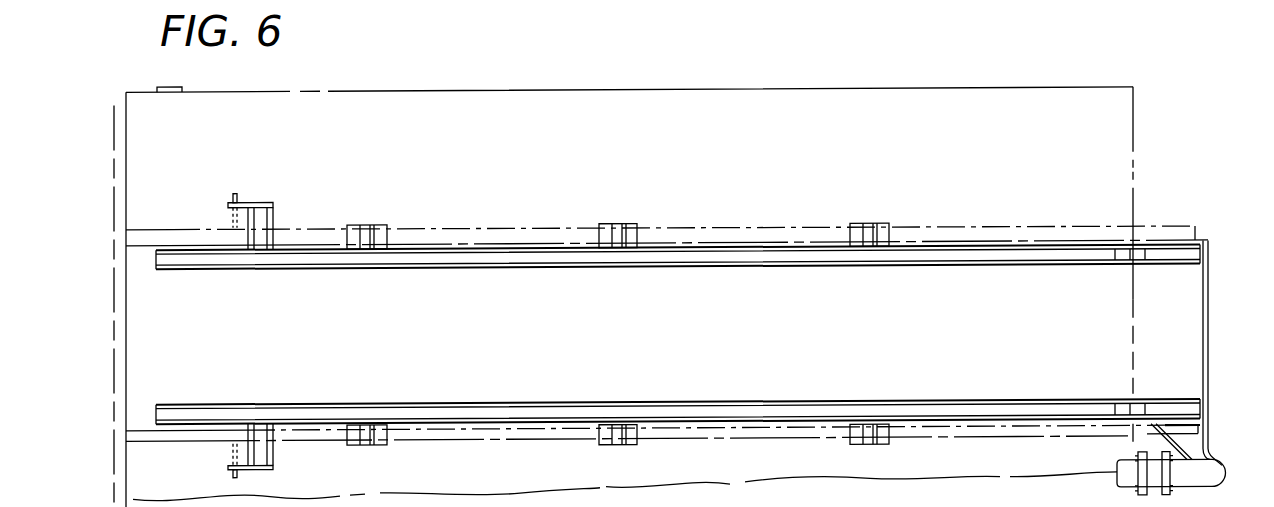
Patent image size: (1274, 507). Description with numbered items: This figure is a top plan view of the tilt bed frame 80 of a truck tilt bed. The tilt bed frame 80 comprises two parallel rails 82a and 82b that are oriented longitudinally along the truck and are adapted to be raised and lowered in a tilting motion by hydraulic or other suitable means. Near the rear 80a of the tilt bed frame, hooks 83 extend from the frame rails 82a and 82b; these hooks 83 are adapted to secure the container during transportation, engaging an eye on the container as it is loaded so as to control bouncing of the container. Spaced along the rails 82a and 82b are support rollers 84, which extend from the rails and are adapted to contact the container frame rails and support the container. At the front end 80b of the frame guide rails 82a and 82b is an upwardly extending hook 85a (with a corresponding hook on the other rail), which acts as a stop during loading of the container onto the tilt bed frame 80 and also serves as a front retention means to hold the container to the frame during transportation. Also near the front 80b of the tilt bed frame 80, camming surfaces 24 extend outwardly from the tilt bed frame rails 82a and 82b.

The tilt bed frame 80 is at (1250, 197).
The rear of the tilt bed frame 80a is at (174, 383).
The front end of the tilt bed frame 80b is at (1210, 364).
The rail 82a is at (481, 272).
The rail 82b is at (481, 404).
The hooks 83 is at (262, 204).
The support rollers 84 is at (373, 227).
The upwardly extending hook 85a is at (1158, 259).
The camming surfaces 24 is at (1210, 248).